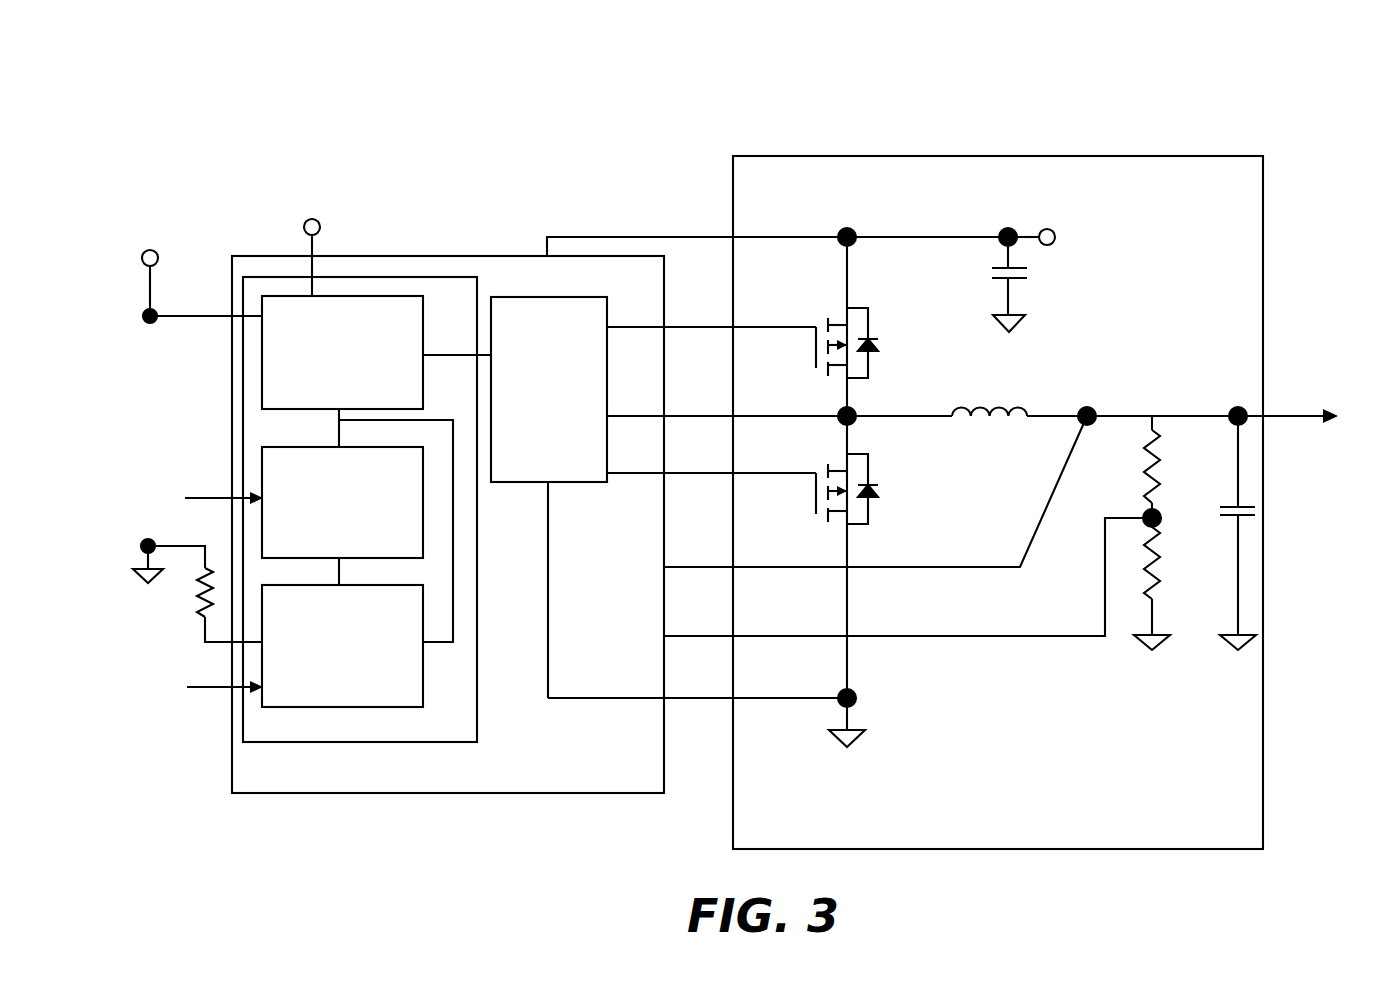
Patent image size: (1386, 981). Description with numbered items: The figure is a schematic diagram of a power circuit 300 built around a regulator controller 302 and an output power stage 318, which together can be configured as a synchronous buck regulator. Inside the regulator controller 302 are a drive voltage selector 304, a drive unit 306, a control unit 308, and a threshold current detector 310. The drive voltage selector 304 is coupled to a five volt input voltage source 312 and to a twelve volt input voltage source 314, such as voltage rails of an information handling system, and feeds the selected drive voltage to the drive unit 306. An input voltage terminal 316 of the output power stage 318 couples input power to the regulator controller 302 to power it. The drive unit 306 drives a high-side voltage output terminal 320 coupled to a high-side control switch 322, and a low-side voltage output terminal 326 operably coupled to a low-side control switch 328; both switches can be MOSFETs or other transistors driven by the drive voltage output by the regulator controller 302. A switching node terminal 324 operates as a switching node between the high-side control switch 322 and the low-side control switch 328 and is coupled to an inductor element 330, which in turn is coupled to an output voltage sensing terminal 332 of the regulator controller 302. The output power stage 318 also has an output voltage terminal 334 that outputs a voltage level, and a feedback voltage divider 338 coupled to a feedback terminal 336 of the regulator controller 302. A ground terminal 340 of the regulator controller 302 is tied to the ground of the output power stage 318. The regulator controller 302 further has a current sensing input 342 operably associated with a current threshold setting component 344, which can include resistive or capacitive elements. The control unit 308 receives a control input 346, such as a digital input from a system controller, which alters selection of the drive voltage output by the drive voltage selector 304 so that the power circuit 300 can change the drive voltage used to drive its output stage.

The power circuit 300 is at (248, 107).
The regulator controller 302 is at (470, 253).
The drive voltage selector 304 is at (342, 352).
The drive unit 306 is at (549, 389).
The control unit 308 is at (342, 502).
The threshold current detector 310 is at (342, 646).
The five volt input voltage source 312 is at (194, 272).
The twelve volt input voltage source 314 is at (318, 247).
The input voltage terminal 316 is at (814, 225).
The output power stage 318 is at (1266, 218).
The high-side voltage output terminal (DH) 320 is at (711, 312).
The high-side control switch 322 is at (837, 303).
The switching node terminal (LX) 324 is at (779, 400).
The low-side voltage output terminal (DL) 326 is at (711, 457).
The low-side control switch 328 is at (840, 460).
The inductor element 330 is at (1013, 400).
The output voltage sensing terminal 332 is at (850, 491).
The output voltage terminal 334 is at (1317, 375).
The feedback terminal 336 is at (891, 577).
The feedback voltage divider 338 is at (1142, 508).
The GND line 340 is at (740, 705).
The current sensing input 342 is at (216, 701).
The current threshold setting component 344 is at (197, 590).
The control input 346 is at (218, 488).